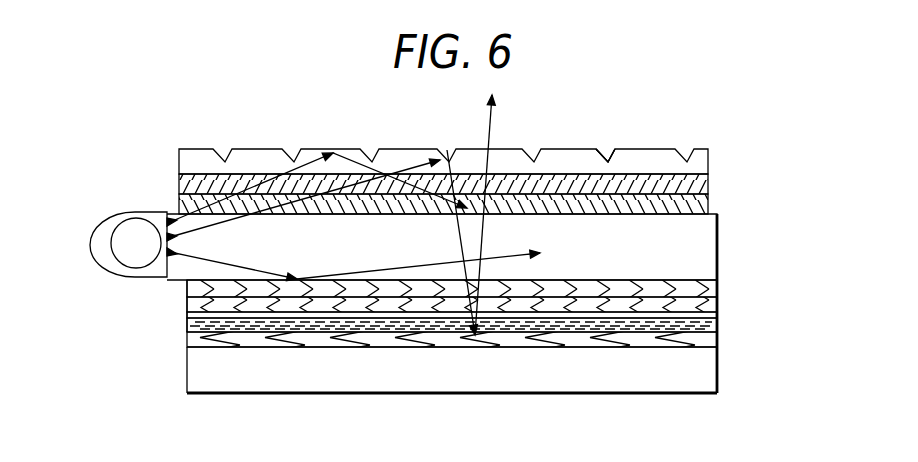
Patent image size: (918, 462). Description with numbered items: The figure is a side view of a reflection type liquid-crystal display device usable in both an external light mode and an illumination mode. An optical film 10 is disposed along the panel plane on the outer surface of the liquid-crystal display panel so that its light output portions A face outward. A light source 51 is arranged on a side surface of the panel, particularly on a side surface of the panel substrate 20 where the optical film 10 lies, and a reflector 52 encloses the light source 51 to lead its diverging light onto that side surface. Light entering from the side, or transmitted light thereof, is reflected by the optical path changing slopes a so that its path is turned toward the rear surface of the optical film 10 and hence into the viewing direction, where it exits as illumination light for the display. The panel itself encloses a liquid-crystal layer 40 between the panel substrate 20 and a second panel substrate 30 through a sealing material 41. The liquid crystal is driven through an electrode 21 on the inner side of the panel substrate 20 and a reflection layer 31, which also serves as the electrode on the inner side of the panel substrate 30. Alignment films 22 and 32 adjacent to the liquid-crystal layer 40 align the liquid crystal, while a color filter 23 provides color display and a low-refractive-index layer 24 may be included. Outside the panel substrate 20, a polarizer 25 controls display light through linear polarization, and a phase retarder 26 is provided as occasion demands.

The optical film 10 is at (710, 158).
The polarizer 25 is at (710, 183).
The phase retarder 26 is at (710, 205).
The panel substrate 20 is at (718, 240).
The electrode 21 is at (718, 302).
The alignment film 22 is at (718, 312).
The color filter 23 is at (718, 300).
The low-refractive-index layer 24 is at (718, 287).
The sealing material 41 is at (718, 330).
The reflection layer 31 is at (718, 343).
The panel substrate 30 is at (187, 382).
The alignment film 32 is at (187, 328).
The liquid-crystal layer 40 is at (540, 330).
The light source 51 is at (133, 249).
The reflector 52 is at (145, 212).
The optical path changing slope a is at (600, 148).
The light output portion A is at (612, 150).